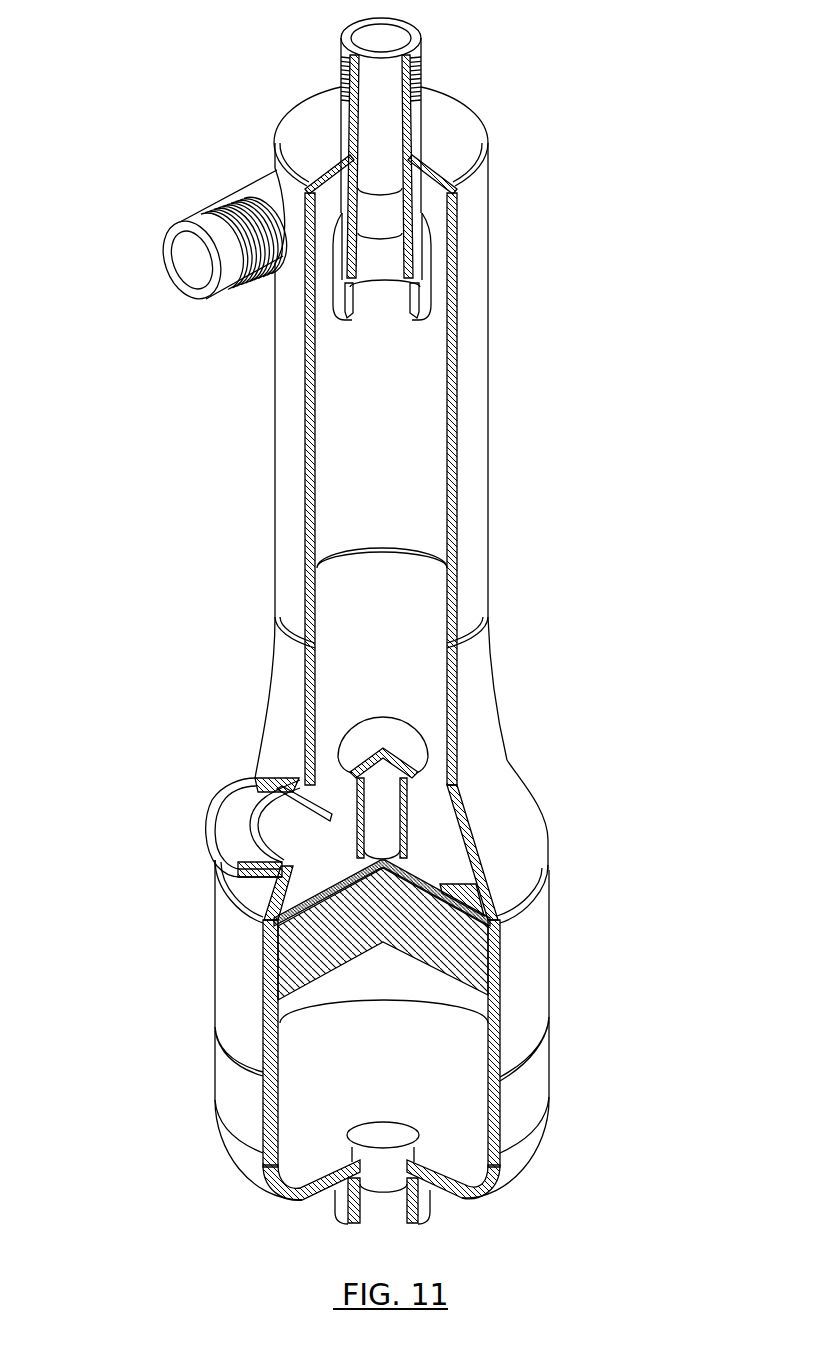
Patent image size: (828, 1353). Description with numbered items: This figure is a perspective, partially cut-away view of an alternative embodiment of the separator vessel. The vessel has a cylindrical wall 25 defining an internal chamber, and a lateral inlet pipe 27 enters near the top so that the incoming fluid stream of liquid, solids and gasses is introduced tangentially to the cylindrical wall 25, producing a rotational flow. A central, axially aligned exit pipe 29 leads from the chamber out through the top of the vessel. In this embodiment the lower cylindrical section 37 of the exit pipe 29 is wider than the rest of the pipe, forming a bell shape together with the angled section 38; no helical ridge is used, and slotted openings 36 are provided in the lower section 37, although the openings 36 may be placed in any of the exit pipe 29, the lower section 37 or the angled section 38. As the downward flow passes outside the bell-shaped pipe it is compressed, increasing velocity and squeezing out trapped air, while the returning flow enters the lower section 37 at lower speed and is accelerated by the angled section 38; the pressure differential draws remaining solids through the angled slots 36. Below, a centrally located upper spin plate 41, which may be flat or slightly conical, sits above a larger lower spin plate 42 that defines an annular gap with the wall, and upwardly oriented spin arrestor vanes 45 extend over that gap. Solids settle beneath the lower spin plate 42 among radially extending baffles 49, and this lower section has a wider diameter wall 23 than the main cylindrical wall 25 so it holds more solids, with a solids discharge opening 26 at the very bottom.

The wider diameter wall 23 is at (522, 1037).
The cylindrical wall 25 is at (473, 240).
The solids discharge opening 26 is at (427, 1204).
The lateral inlet pipe 27 is at (192, 260).
The exit pipe 29 is at (415, 40).
The slotted openings 36 is at (417, 293).
The lower cylindrical section 37 is at (340, 293).
The angled section 38 is at (342, 243).
The upper spin plate 41 is at (392, 725).
The lower spin plate 42 is at (427, 810).
The spin arrestor vanes 45 is at (297, 808).
The baffles 49 is at (468, 948).